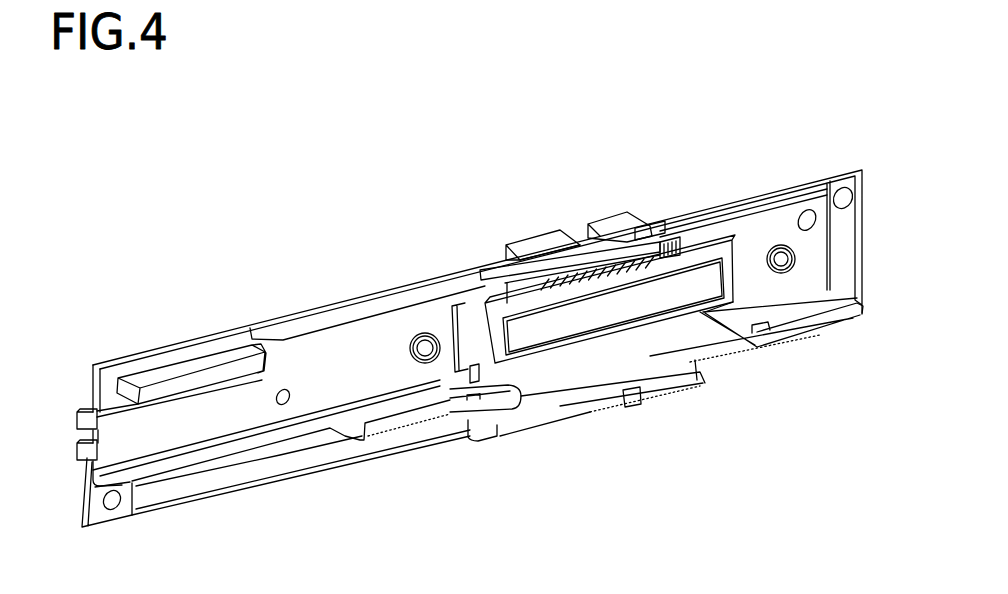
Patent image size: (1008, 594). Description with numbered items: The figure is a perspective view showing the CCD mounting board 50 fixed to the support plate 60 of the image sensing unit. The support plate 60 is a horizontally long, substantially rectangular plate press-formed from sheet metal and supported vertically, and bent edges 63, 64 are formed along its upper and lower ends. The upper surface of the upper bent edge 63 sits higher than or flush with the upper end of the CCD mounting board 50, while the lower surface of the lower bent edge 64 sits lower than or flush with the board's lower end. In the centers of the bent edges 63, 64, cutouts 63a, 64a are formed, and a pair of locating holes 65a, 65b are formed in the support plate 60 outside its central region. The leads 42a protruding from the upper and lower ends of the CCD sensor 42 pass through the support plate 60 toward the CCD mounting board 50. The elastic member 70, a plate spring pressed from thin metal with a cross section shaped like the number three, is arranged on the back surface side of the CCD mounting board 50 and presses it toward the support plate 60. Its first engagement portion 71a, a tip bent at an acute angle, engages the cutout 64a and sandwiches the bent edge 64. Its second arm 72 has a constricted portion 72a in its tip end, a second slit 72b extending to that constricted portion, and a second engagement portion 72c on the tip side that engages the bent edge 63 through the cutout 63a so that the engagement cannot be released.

The CCD sensor 42 is at (683, 292).
The leads 42a is at (632, 272).
The CCD mounting board 50 is at (177, 358).
The support plate 60 is at (336, 348).
The bent edge 63 is at (394, 298).
The cutout 63a is at (634, 232).
The bent edge 64 is at (528, 424).
The cutout 64a is at (624, 392).
The locating hole 65a is at (427, 352).
The locating hole 65b is at (783, 262).
The elastic member 70 is at (556, 188).
The first engagement portion 71a is at (605, 396).
The second arm 72 is at (530, 243).
The constricted portion 72a is at (589, 267).
The second slit 72b is at (581, 234).
The second engagement portion 72c is at (547, 279).